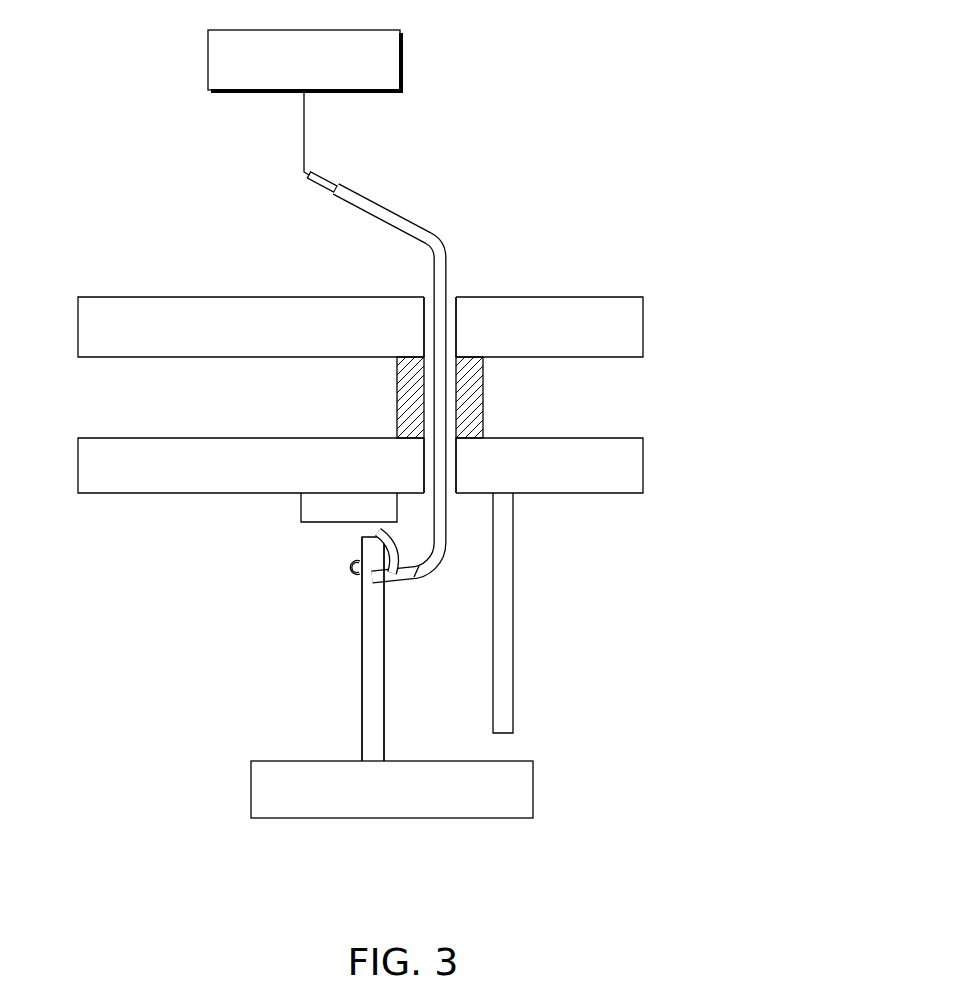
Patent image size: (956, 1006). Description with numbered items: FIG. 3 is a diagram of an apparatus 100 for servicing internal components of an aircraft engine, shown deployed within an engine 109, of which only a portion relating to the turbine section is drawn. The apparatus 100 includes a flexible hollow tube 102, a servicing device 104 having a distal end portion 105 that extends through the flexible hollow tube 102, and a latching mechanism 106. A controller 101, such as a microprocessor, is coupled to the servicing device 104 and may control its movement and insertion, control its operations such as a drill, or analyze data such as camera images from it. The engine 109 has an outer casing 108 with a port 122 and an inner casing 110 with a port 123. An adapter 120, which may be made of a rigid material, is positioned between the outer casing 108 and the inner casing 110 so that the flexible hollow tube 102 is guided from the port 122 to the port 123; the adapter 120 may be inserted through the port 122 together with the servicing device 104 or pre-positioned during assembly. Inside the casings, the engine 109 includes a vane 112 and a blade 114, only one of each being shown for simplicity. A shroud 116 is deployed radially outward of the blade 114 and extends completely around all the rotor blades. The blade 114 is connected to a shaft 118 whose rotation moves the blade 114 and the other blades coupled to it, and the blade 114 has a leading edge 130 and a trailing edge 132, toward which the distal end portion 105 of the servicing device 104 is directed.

The apparatus 100 is at (430, 188).
The controller 101 is at (403, 60).
The flexible hollow tube 102 is at (447, 240).
The servicing device 104 is at (340, 178).
The distal end portion 105 is at (381, 553).
The latching mechanism 106 is at (354, 571).
The outer casing 108 is at (628, 324).
The engine 109 is at (714, 184).
The inner casing 110 is at (628, 462).
The vane 112 is at (514, 632).
The blade 114 is at (385, 688).
The shroud 116 is at (368, 506).
The shaft 118 is at (388, 806).
The adapter 120 is at (484, 397).
The port 122 is at (455, 343).
The port 123 is at (448, 462).
The leading edge 130 is at (361, 668).
The trailing edge 132 is at (385, 622).